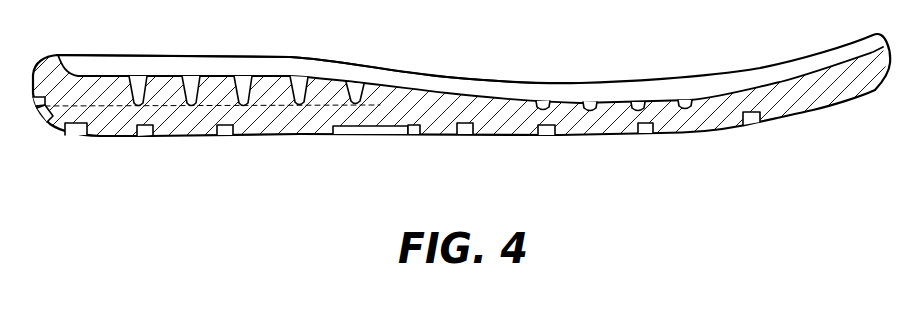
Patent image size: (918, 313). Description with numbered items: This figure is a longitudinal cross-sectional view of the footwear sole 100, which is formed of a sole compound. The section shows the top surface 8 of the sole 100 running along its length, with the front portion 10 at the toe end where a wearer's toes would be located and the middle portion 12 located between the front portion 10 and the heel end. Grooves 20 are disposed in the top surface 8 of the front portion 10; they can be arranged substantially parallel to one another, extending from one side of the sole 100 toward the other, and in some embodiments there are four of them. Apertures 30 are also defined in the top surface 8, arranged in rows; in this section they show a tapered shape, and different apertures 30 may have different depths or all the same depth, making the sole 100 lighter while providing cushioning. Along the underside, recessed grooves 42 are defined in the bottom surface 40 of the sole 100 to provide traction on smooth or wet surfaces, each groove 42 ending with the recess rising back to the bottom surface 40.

The sole 100 is at (816, 158).
The front portion 10 is at (749, 89).
The top surface 8 is at (125, 76).
The middle portion 12 is at (371, 103).
The grooves 20 is at (542, 103).
The apertures 30 is at (296, 77).
The bottom surface 40 is at (188, 137).
The recessed grooves 42 is at (547, 137).